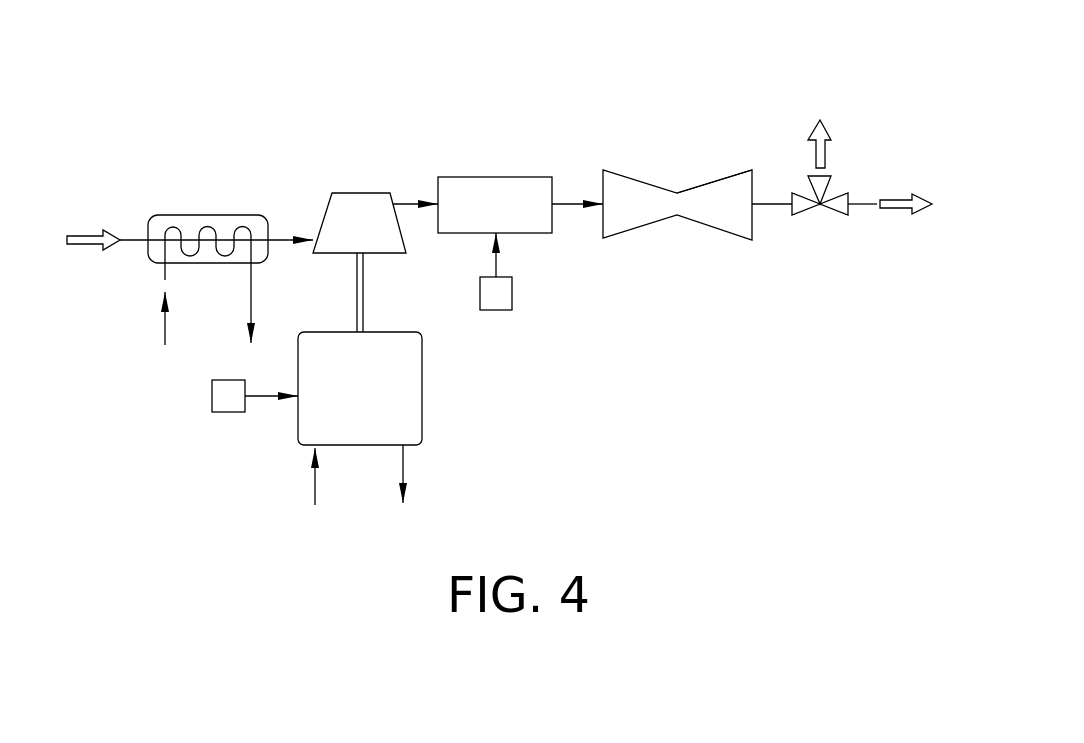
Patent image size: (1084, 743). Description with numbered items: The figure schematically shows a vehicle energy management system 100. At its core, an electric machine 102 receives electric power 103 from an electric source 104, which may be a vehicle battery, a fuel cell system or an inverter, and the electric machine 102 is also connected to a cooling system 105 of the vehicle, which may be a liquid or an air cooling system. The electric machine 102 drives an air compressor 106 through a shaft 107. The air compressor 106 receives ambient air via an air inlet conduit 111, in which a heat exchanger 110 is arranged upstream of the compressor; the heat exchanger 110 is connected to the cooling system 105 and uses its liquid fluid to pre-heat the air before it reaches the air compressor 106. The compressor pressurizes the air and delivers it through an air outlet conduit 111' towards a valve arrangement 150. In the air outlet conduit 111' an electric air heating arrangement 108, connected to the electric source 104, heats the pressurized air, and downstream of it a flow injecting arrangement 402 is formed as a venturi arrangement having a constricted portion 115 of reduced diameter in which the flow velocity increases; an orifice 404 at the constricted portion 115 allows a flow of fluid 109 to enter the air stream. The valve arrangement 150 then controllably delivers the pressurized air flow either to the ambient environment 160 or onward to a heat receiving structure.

The vehicle energy management system 100 is at (260, 97).
The electric machine 102 is at (355, 445).
The electric power 103 is at (253, 400).
The electric source 104 is at (512, 292).
The cooling system 105 is at (163, 330).
The air compressor 106 is at (360, 193).
The shaft 107 is at (367, 293).
The electric air heating arrangement 108 is at (500, 177).
The flow of fluid 109 is at (682, 178).
The heat exchanger 110 is at (212, 215).
The air inlet conduit 111 is at (205, 193).
The air outlet conduit 111' is at (611, 205).
The constricted portion 115 is at (680, 217).
The valve arrangement 150 is at (838, 187).
The ambient environment 160 is at (832, 122).
The flow injecting arrangement 402 is at (720, 178).
The orifice 404 is at (673, 207).